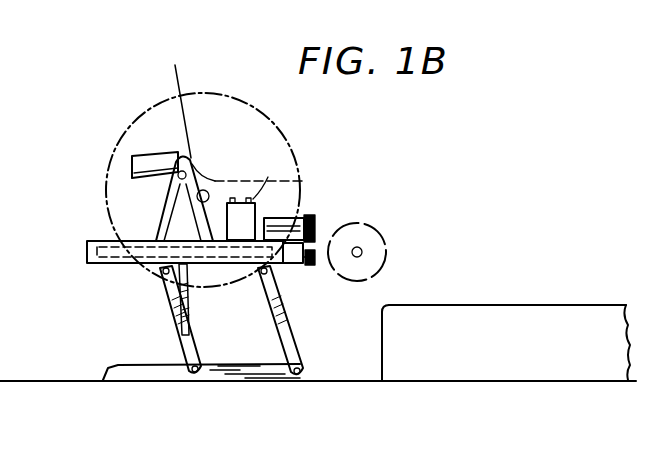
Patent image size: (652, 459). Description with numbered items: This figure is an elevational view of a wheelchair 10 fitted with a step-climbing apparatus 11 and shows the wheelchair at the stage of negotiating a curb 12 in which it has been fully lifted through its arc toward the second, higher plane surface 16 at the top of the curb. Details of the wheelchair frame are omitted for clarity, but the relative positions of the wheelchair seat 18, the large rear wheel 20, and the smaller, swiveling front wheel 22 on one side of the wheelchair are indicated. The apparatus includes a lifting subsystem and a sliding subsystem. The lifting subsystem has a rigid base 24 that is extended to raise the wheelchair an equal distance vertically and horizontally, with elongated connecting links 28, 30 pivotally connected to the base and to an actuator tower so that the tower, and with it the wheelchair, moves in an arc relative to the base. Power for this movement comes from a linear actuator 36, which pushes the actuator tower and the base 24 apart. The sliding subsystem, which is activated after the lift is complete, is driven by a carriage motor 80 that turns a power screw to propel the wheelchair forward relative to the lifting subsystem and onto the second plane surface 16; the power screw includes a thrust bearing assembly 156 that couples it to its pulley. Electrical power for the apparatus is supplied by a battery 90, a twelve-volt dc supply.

The wheelchair 10 is at (292, 122).
The step-climbing apparatus 11 is at (98, 288).
The curb 12 is at (506, 342).
The second plane surface 16 is at (505, 305).
The wheelchair seat 18 is at (288, 178).
The large rear wheel 20 is at (106, 178).
The swiveling front wheel 22 is at (386, 237).
The rigid base 24 is at (118, 368).
The connecting link 28 is at (292, 346).
The connecting link 30 is at (196, 340).
The linear actuator 36 is at (195, 267).
The carriage motor 80 is at (300, 222).
The battery 90 is at (249, 177).
The thrust bearing assembly 156 is at (294, 262).